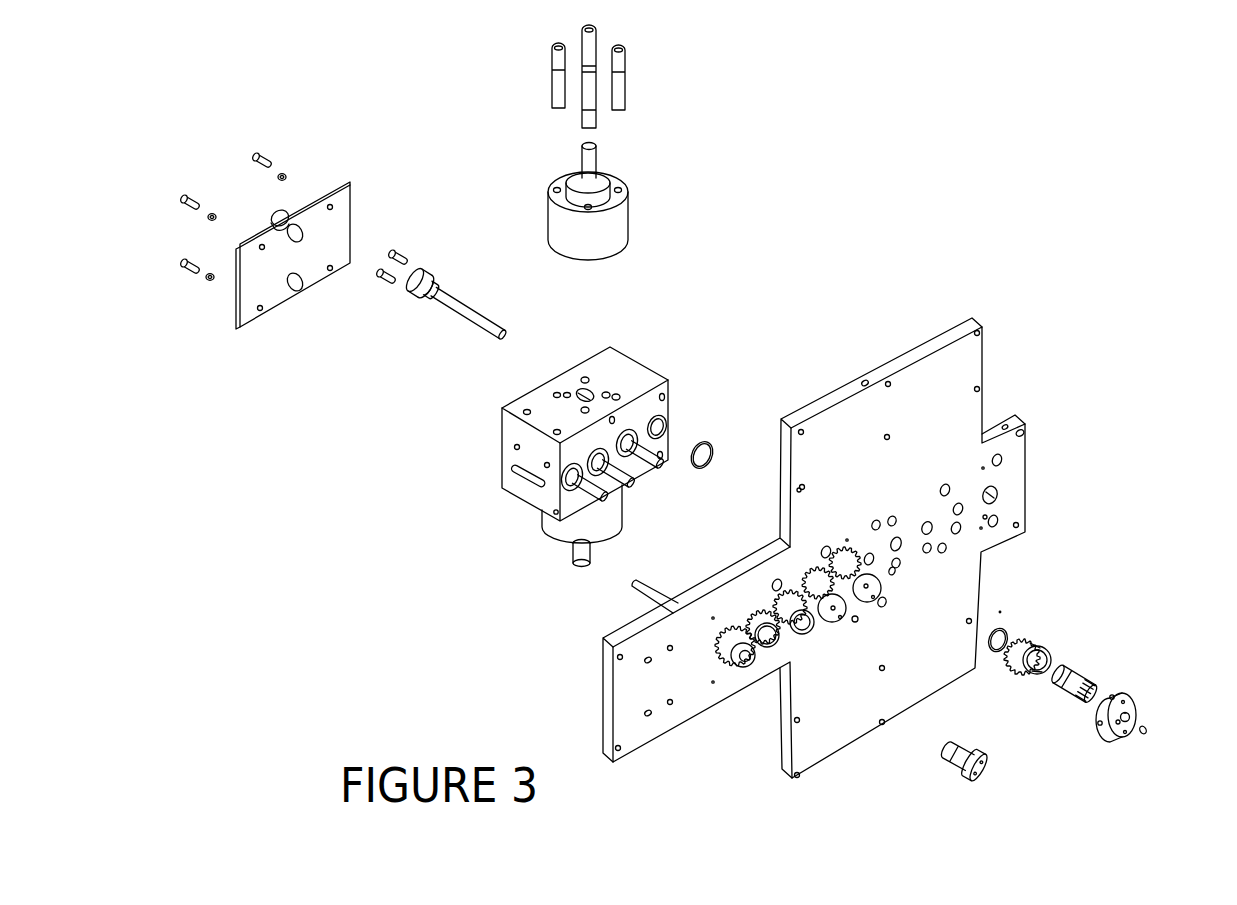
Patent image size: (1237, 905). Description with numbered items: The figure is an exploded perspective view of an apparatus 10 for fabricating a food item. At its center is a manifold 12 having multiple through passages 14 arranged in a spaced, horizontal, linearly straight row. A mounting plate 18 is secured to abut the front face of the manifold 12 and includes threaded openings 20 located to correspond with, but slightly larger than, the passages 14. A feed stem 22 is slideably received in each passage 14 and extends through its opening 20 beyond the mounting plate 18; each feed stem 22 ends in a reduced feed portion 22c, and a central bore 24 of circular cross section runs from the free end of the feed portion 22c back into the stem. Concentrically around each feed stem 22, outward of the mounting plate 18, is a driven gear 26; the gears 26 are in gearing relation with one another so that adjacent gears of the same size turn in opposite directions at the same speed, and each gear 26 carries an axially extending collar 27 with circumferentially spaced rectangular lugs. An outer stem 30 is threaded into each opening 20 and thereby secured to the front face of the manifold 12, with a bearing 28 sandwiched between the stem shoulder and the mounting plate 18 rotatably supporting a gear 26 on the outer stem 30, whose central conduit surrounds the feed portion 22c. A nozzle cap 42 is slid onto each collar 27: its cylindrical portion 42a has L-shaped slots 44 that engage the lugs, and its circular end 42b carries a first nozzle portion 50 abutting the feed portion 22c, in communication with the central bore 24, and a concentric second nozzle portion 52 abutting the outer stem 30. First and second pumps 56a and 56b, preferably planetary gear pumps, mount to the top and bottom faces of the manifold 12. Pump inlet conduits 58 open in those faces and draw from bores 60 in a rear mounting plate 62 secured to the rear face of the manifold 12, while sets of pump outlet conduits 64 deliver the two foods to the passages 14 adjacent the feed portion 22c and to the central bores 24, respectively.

The apparatus 10 is at (851, 193).
The manifold 12 is at (622, 352).
The through passage 14 is at (563, 482).
The mounting plate 18 is at (978, 367).
The threaded opening 20 is at (997, 492).
The feed stem 22 is at (642, 453).
The feed portion 22c is at (580, 480).
The central bore 24 is at (603, 502).
The gear 26 is at (1030, 638).
The collar 27 is at (1022, 682).
The bearing 28 is at (1040, 642).
The outer stem 30 is at (1072, 678).
The nozzle cap 42 is at (1137, 707).
The cylindrical portion 42a is at (1107, 728).
The circular end 42b is at (1143, 735).
The L-shaped slot 44 is at (1112, 698).
The first nozzle portion 50 is at (1135, 720).
The second nozzle portion 52 is at (1118, 723).
The first pump 56a is at (628, 217).
The second pump 56b is at (607, 518).
The pump inlet conduit 58 is at (577, 392).
The bore 60 is at (280, 215).
The mounting plate 62 is at (275, 287).
The pump outlet conduit 64 is at (563, 395).